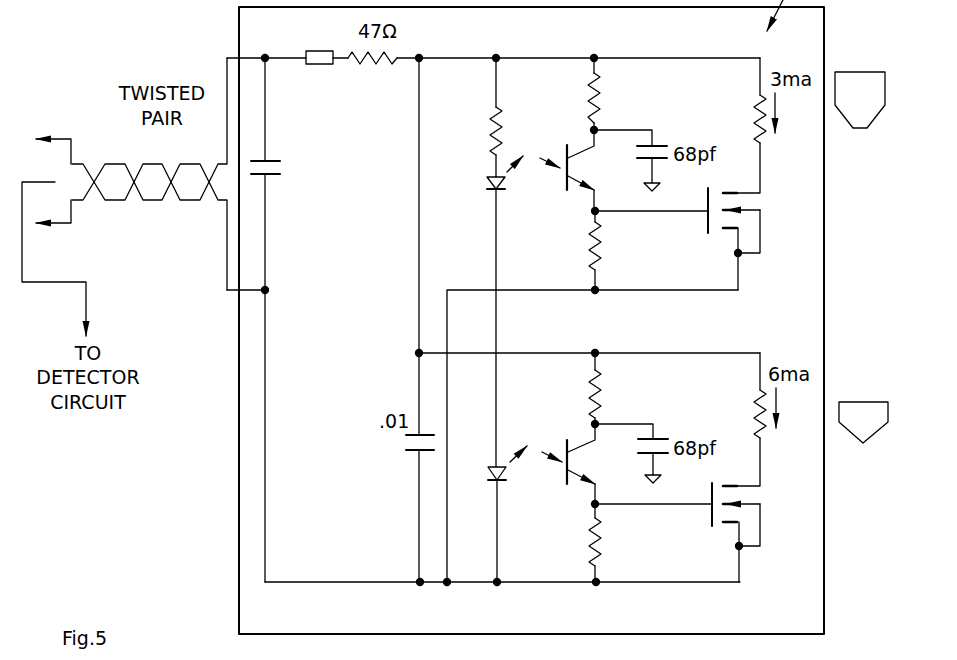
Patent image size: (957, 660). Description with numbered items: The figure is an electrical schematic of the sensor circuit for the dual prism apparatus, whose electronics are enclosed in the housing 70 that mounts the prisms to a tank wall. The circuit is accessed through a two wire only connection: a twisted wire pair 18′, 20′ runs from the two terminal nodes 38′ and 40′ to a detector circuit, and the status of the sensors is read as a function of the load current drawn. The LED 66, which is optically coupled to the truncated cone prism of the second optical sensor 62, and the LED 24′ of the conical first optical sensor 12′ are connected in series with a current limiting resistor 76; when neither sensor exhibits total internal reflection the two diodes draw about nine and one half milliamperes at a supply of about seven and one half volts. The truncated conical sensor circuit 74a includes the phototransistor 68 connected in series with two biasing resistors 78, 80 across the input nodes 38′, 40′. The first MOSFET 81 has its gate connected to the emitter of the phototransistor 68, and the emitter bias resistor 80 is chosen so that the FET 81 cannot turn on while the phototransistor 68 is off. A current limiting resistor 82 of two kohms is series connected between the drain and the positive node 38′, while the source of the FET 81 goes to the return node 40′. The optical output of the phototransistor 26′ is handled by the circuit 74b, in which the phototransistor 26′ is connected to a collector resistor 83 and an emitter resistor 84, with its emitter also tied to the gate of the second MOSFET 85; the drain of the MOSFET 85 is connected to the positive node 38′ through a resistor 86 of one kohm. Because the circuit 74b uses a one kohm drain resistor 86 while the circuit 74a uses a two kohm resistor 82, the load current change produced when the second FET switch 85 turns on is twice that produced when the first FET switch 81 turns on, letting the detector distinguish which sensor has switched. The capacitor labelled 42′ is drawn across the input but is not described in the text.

The twisted wire pair 18′ is at (78, 162).
The twisted wire pair 20′ is at (78, 202).
The terminal node 38′ is at (266, 52).
The 1800pf capacitor 42′ is at (270, 178).
The terminal node 40′ is at (268, 290).
The housing 70 is at (348, 619).
The current limiting resistor 76 is at (492, 152).
The LED 66 is at (492, 194).
The phototransistor 68 is at (560, 150).
The biasing resistor 78 is at (600, 112).
The current limiting resistor 82 is at (757, 103).
The emitter bias resistor 80 is at (603, 247).
The first MOSFET 81 is at (708, 224).
The truncated conical sensor circuit 74a is at (586, 305).
The conical sensor circuit 74b is at (609, 343).
The second optical sensor 62 is at (878, 134).
The phototransistor 26′ is at (562, 447).
The LED 24′ is at (495, 485).
The collector resistor 83 is at (603, 410).
The resistor 86 is at (760, 396).
The emitter resistor 84 is at (603, 538).
The second MOSFET 85 is at (712, 512).
The first optical sensor 12′ is at (881, 447).